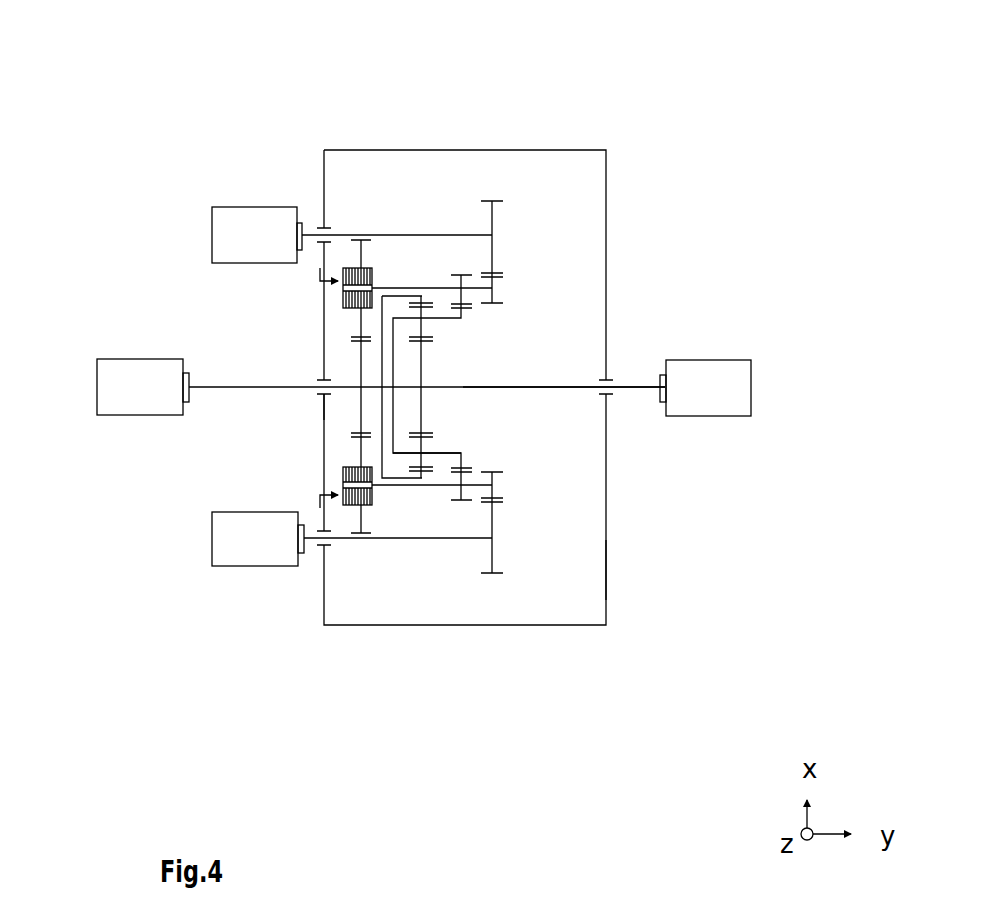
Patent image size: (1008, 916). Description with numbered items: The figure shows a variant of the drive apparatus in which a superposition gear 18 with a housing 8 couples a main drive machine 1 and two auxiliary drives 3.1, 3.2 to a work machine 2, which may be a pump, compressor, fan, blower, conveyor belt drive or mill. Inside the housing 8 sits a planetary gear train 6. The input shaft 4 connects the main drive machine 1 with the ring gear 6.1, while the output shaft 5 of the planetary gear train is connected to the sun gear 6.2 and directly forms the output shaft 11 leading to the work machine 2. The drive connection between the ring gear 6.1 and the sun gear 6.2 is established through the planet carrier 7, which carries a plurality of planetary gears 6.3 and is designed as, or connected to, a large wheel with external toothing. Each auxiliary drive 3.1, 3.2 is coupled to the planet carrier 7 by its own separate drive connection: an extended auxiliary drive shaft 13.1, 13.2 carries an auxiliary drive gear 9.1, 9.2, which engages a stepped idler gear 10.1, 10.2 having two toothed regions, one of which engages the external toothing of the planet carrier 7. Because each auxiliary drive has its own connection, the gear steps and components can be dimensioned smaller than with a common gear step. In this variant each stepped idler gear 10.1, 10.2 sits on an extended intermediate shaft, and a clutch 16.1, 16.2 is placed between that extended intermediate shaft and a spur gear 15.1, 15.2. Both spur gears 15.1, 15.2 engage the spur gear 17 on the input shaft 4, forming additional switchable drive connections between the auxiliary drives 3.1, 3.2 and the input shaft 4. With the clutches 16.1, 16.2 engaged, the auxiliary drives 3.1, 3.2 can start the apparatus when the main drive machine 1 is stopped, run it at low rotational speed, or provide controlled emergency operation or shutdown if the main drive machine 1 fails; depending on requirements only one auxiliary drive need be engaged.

The main drive machine 1 is at (132, 358).
The work machine 2 is at (725, 360).
The auxiliary drive 3.1 is at (250, 207).
The auxiliary drive 3.2 is at (233, 566).
The input shaft 4 is at (205, 386).
The output shaft of the planetary gear train 5 is at (460, 388).
The planetary gear train 6 is at (450, 354).
The ring gear 6.1 is at (350, 377).
The sun gear 6.2 is at (460, 412).
The planetary gears 6.3 is at (475, 267).
The planet carrier 7 is at (460, 457).
The housing 8 is at (528, 150).
The auxiliary drive gear 9.1 is at (492, 225).
The auxiliary drive gear 9.2 is at (497, 558).
The stepped idler gear 10.1 is at (481, 262).
The stepped idler gear 10.2 is at (483, 510).
The output shaft 11 is at (628, 387).
The auxiliary drive shaft 13.1 is at (397, 235).
The auxiliary drive shaft 13.2 is at (385, 538).
The spur gear 15.1 is at (352, 331).
The spur gear 15.2 is at (358, 443).
The clutch 16.1 is at (342, 302).
The clutch 16.2 is at (342, 477).
The spur gear 17 is at (322, 410).
The superposition gear 18 is at (628, 561).